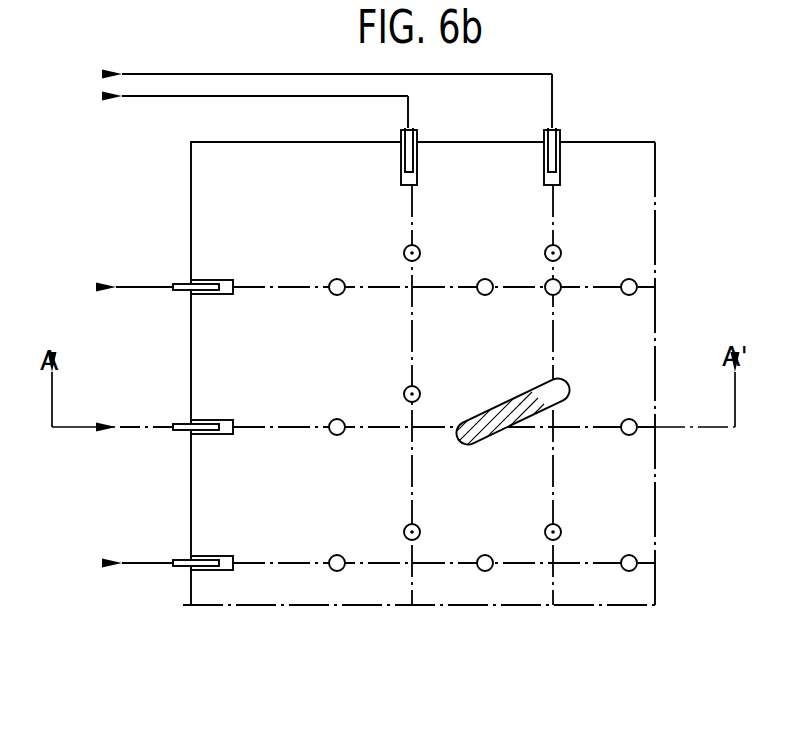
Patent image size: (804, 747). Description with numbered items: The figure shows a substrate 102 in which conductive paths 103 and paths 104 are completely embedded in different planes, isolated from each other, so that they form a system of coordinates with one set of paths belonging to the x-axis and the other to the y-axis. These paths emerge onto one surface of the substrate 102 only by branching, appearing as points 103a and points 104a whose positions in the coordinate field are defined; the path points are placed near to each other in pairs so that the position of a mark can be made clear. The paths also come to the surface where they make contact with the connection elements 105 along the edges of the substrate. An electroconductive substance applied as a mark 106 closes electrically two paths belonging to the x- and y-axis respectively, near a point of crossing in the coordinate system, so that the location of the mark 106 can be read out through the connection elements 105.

The substrate 102 is at (202, 212).
The path 103 is at (397, 565).
The point 103a is at (643, 250).
The path 104 is at (413, 573).
The point 104a is at (559, 247).
The connection element 105 is at (556, 134).
The mark 106 is at (566, 383).